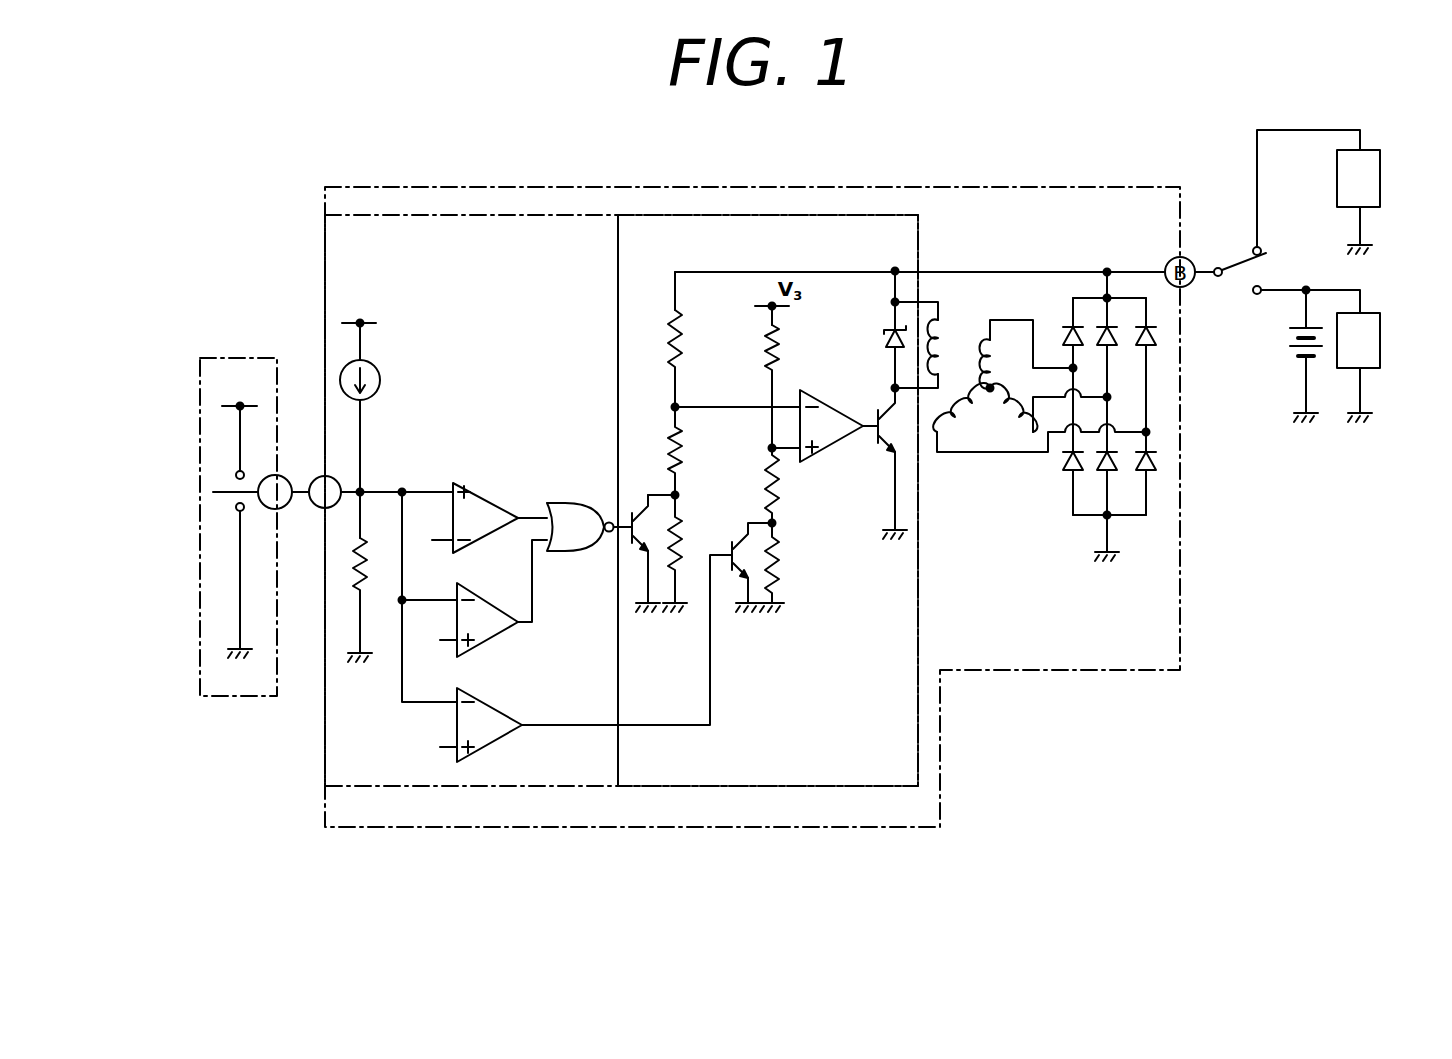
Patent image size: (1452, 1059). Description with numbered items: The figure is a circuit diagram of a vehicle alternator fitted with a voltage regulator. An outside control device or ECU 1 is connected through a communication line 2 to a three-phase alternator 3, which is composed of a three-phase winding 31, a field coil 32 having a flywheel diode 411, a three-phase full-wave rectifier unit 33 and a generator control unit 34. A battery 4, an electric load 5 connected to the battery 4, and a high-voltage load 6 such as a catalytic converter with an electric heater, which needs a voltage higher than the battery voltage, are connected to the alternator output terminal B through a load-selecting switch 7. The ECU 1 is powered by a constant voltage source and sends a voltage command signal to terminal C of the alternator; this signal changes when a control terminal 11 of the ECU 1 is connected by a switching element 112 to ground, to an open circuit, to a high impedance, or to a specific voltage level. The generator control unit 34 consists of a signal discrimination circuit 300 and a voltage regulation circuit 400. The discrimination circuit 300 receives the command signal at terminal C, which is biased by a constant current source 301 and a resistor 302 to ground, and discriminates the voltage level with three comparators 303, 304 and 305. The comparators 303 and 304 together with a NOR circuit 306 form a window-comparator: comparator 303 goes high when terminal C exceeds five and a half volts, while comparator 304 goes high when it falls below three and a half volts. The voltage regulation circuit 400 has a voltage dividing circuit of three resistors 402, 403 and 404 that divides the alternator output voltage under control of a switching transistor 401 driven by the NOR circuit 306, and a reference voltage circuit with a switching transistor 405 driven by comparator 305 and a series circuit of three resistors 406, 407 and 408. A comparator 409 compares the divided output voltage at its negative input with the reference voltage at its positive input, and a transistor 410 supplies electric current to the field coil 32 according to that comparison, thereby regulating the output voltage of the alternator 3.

The outside control device or ECU 1 is at (185, 494).
The switching element 112 is at (222, 493).
The control terminal 11 is at (288, 506).
The communication line 2 is at (301, 488).
The three-phase alternator 3 is at (958, 187).
The signal discrimination circuit 300 is at (493, 775).
The constant current source 301 is at (378, 371).
The resistor 302 is at (351, 560).
The comparator 303 is at (489, 500).
The comparator 304 is at (489, 599).
The comparator 305 is at (489, 706).
The NOR circuit 306 is at (588, 549).
The voltage regulation circuit 400 is at (752, 777).
The switching transistor 401 is at (640, 548).
The resistor 402 is at (689, 325).
The resistor 403 is at (689, 430).
The resistor 404 is at (683, 542).
The switching transistor 405 is at (727, 572).
The resistor 406 is at (781, 324).
The resistor 407 is at (783, 484).
The resistor 408 is at (786, 553).
The comparator 409 is at (838, 408).
The transistor 410 is at (879, 447).
The flywheel diode 411 is at (884, 339).
The three-phase winding 31 is at (1002, 432).
The field coil 32 is at (950, 326).
The three-phase full-wave rectifier unit 33 is at (1148, 377).
The generator control unit 34 is at (1077, 496).
The battery 4 is at (1290, 326).
The electric load 5 is at (1382, 334).
The high-voltage load 6 is at (1382, 160).
The load-selecting switch 7 is at (1243, 263).